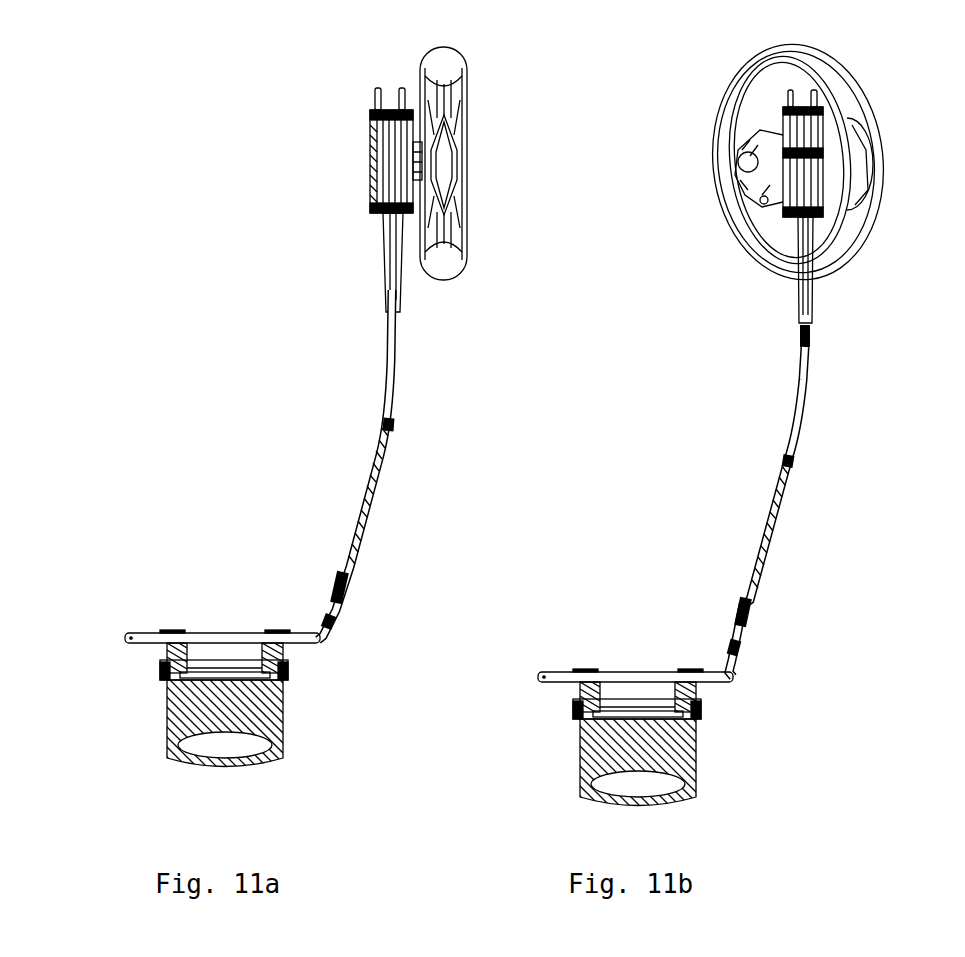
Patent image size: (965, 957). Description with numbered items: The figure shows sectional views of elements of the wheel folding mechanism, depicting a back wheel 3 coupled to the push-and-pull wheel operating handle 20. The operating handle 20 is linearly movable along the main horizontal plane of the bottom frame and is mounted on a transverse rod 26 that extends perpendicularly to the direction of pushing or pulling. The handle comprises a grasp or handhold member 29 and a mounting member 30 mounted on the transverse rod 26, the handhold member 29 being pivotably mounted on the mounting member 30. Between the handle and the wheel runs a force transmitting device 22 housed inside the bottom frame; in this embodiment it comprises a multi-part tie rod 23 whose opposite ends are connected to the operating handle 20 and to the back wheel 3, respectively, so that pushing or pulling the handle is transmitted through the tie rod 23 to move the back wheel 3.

In FIG. 11A, the back wheel 3 is at (473, 143).
In FIG. 11B, the back wheel 3 is at (887, 95).
In FIG. 11A, the wheel operating handle 20 is at (236, 657).
In FIG. 11B, the wheel operating handle 20 is at (657, 671).
In FIG. 11B, the force transmitting device 22 is at (812, 428).
In FIG. 11A, the tie rod 23 is at (378, 522).
In FIG. 11B, the tie rod 23 is at (782, 530).
In FIG. 11A, the transverse rod 26 is at (199, 637).
In FIG. 11B, the transverse rod 26 is at (635, 621).
In FIG. 11A, the handhold member 29 is at (267, 707).
In FIG. 11B, the handhold member 29 is at (638, 764).
In FIG. 11A, the mounting member 30 is at (270, 637).
In FIG. 11B, the mounting member 30 is at (624, 628).